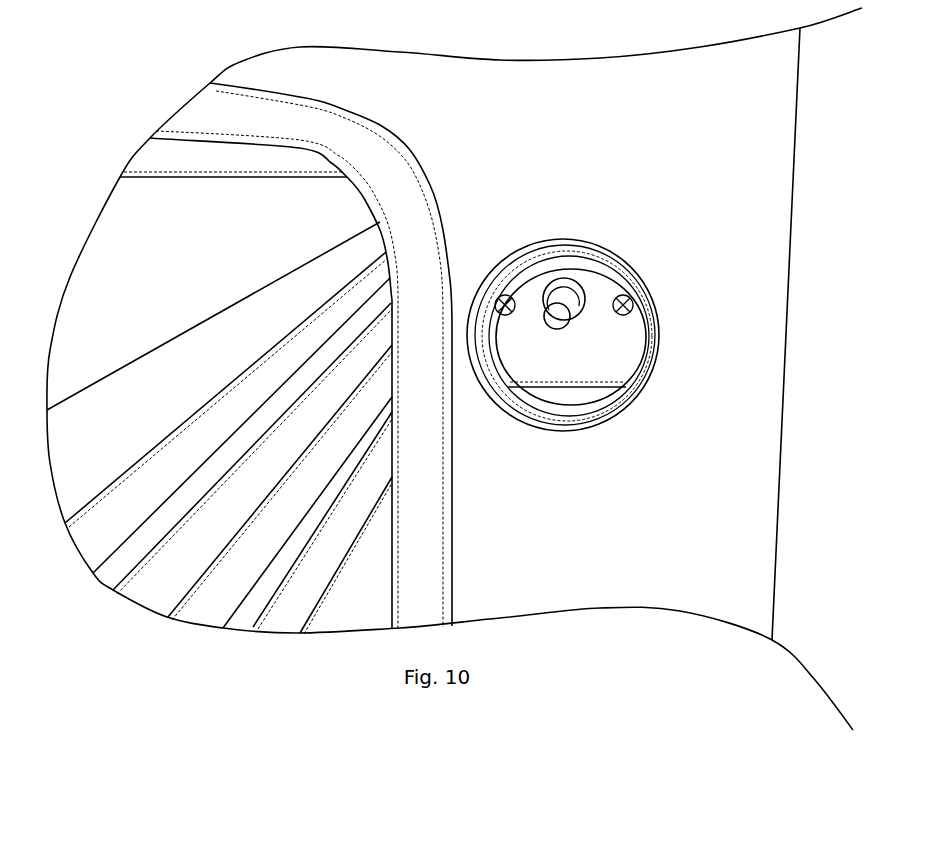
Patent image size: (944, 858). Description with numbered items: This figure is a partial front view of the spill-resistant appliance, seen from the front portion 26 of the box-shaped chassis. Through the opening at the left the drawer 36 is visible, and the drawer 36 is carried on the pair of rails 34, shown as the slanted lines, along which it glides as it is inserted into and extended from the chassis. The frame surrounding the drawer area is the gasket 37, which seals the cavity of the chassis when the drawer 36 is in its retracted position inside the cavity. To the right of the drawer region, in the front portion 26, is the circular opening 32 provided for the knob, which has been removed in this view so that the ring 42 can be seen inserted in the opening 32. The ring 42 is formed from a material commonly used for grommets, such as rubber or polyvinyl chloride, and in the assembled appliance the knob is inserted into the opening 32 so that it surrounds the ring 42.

The front portion 26 is at (743, 340).
The opening 32 is at (566, 272).
The rails 34 is at (277, 515).
The drawer 36 is at (237, 250).
The gasket 37 is at (380, 180).
The ring 42 is at (630, 390).